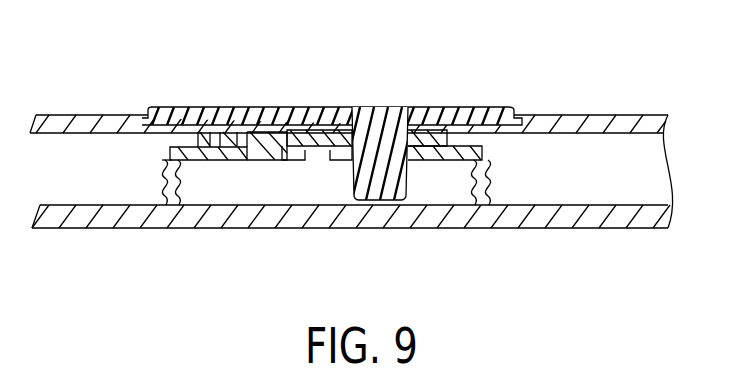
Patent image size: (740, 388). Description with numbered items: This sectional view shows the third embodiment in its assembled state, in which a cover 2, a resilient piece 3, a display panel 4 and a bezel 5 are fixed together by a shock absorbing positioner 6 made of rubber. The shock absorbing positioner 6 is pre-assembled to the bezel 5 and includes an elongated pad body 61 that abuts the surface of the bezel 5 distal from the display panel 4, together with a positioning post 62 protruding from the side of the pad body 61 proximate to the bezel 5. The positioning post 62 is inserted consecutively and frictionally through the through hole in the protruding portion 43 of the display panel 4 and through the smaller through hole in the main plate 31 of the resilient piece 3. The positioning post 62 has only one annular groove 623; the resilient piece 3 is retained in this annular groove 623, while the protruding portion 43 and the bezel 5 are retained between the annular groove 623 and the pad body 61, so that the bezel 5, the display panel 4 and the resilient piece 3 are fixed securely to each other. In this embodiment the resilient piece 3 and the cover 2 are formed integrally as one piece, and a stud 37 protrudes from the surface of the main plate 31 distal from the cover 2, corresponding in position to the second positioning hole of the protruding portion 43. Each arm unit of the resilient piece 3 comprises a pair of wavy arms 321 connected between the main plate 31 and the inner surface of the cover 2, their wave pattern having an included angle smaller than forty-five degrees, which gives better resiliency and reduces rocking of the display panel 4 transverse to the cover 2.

The cover 2 is at (607, 229).
The resilient piece 3 is at (493, 190).
The display panel 4 is at (633, 163).
The bezel 5 is at (605, 116).
The shock absorbing positioner 6 is at (332, 141).
The pad body 61 is at (205, 117).
The positioning post 62 is at (378, 178).
The annular groove 623 is at (357, 149).
The main plate 31 is at (243, 160).
The wavy arms 321 is at (172, 160).
The stud 37 is at (266, 131).
The protruding portion 43 is at (320, 128).